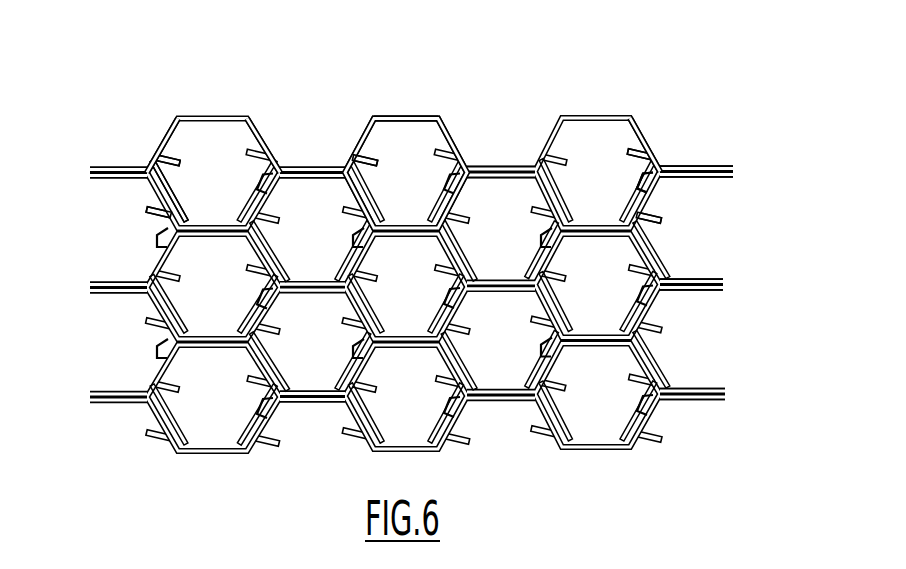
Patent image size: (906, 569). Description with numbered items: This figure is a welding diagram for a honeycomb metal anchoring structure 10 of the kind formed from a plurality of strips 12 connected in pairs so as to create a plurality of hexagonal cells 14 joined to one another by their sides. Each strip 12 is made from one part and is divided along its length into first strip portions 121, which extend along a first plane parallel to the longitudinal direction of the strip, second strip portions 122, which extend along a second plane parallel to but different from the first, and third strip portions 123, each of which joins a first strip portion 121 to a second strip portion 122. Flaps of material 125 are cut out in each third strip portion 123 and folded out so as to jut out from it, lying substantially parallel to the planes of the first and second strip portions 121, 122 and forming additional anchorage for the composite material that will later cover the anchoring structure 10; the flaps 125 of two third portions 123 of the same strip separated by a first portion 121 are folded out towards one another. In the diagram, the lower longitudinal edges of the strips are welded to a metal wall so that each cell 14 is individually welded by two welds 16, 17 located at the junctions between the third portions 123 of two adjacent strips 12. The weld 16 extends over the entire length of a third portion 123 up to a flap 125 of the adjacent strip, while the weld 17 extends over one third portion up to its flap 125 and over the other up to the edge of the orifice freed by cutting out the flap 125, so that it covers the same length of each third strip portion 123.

The honeycomb metal anchoring structure 10 is at (687, 137).
The strip 12 is at (728, 177).
The hexagonal cell 14 is at (407, 150).
The weld 16 is at (184, 195).
The weld 17 is at (633, 178).
The first strip portion 121 is at (487, 166).
The second strip portion 122 is at (500, 181).
The third strip portion 123 is at (160, 193).
The flap of material 125 is at (663, 213).